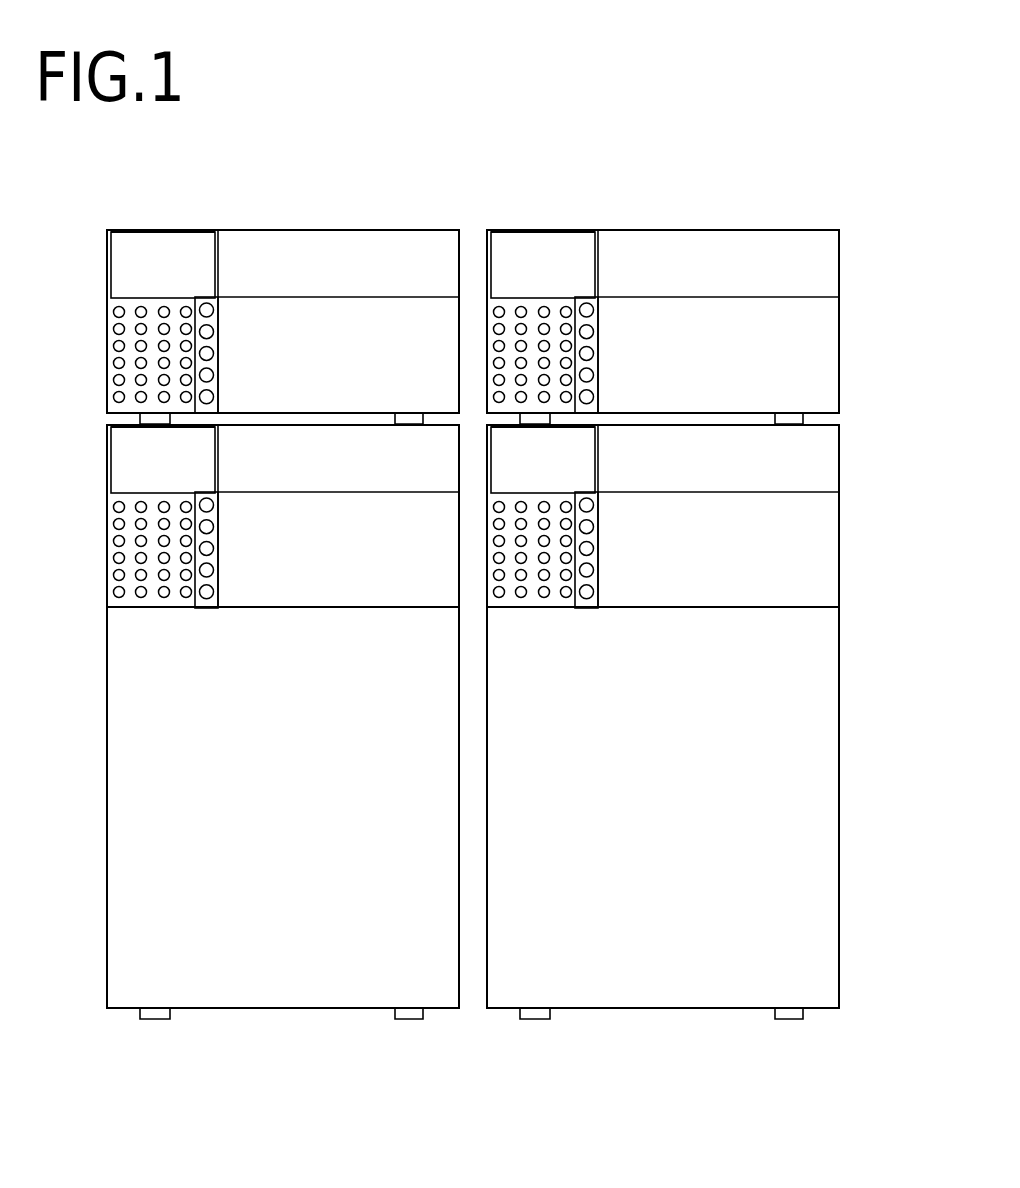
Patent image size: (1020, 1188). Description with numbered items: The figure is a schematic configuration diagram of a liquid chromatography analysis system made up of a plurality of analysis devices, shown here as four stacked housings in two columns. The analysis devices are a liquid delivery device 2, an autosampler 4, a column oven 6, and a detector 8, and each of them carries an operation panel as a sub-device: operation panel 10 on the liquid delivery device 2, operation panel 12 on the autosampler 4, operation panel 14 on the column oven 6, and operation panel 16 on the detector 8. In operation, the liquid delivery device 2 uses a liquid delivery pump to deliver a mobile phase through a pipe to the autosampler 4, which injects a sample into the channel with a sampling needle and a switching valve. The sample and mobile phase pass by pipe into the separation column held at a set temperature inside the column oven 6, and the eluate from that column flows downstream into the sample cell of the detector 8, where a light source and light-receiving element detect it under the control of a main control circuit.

The liquid delivery device 2 is at (247, 289).
The autosampler 4 is at (247, 722).
The column oven 6 is at (703, 722).
The detector 8 is at (663, 289).
The operation panel 10 is at (107, 319).
The operation panel 12 is at (107, 517).
The operation panel 14 is at (598, 541).
The operation panel 16 is at (532, 310).